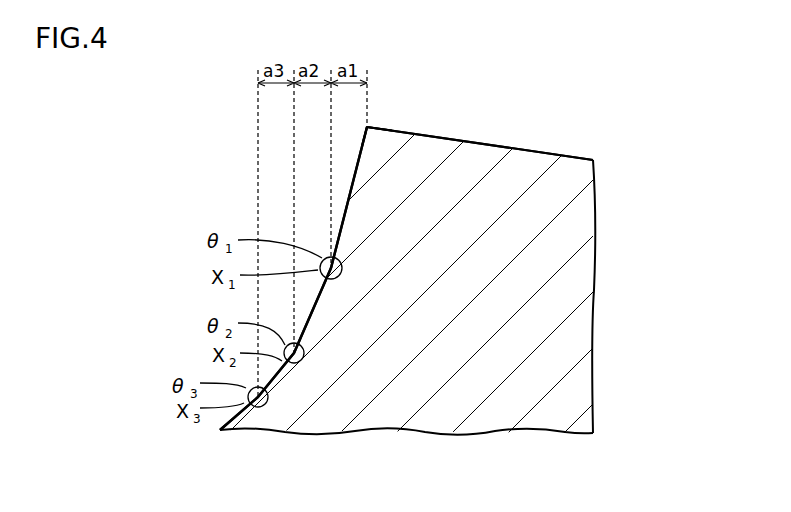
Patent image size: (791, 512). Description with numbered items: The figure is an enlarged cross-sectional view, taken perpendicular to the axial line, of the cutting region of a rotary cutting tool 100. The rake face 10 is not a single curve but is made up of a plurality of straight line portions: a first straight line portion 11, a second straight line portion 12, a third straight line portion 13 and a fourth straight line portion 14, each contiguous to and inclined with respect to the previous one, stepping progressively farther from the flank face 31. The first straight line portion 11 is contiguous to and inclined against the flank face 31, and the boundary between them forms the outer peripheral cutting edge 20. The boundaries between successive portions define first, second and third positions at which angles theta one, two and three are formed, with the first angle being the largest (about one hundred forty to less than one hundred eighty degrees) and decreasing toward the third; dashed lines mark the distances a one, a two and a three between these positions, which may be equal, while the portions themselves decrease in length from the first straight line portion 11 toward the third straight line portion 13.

The rake face 10 is at (132, 182).
The first straight line portion 11 is at (352, 185).
The second straight line portion 12 is at (309, 318).
The third straight line portion 13 is at (272, 379).
The fourth straight line portion 14 is at (236, 418).
The outer peripheral cutting edge 20 is at (368, 126).
The flank face 31 is at (483, 143).
The rotary cutting tool 100 is at (548, 327).